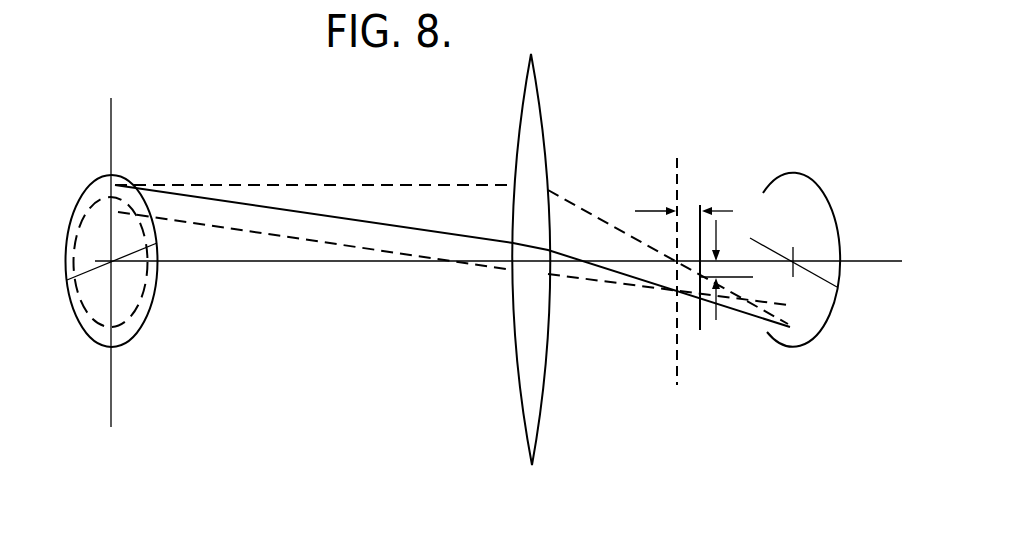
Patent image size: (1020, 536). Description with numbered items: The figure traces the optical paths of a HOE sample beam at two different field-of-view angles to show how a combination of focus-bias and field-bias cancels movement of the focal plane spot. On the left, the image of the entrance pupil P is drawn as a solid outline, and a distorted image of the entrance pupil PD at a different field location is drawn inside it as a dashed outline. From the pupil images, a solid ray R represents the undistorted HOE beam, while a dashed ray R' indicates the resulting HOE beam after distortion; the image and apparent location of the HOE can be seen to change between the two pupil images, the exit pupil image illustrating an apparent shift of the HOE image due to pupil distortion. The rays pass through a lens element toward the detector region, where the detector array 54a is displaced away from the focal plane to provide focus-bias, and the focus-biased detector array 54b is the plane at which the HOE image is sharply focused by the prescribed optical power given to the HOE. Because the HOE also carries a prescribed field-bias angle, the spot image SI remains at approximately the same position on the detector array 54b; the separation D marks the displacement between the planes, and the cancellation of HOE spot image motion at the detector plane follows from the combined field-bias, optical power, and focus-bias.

The detector array 54a is at (535, 450).
The focus-biased detector array 54b is at (678, 339).
The image of the entrance pupil P is at (157, 292).
The distorted image of the entrance pupil PD is at (128, 318).
The object/image point C is at (452, 256).
The solid ray R is at (452, 256).
The dashed ray R' is at (453, 258).
The displacement distance D is at (694, 259).
The spot image SI is at (683, 285).